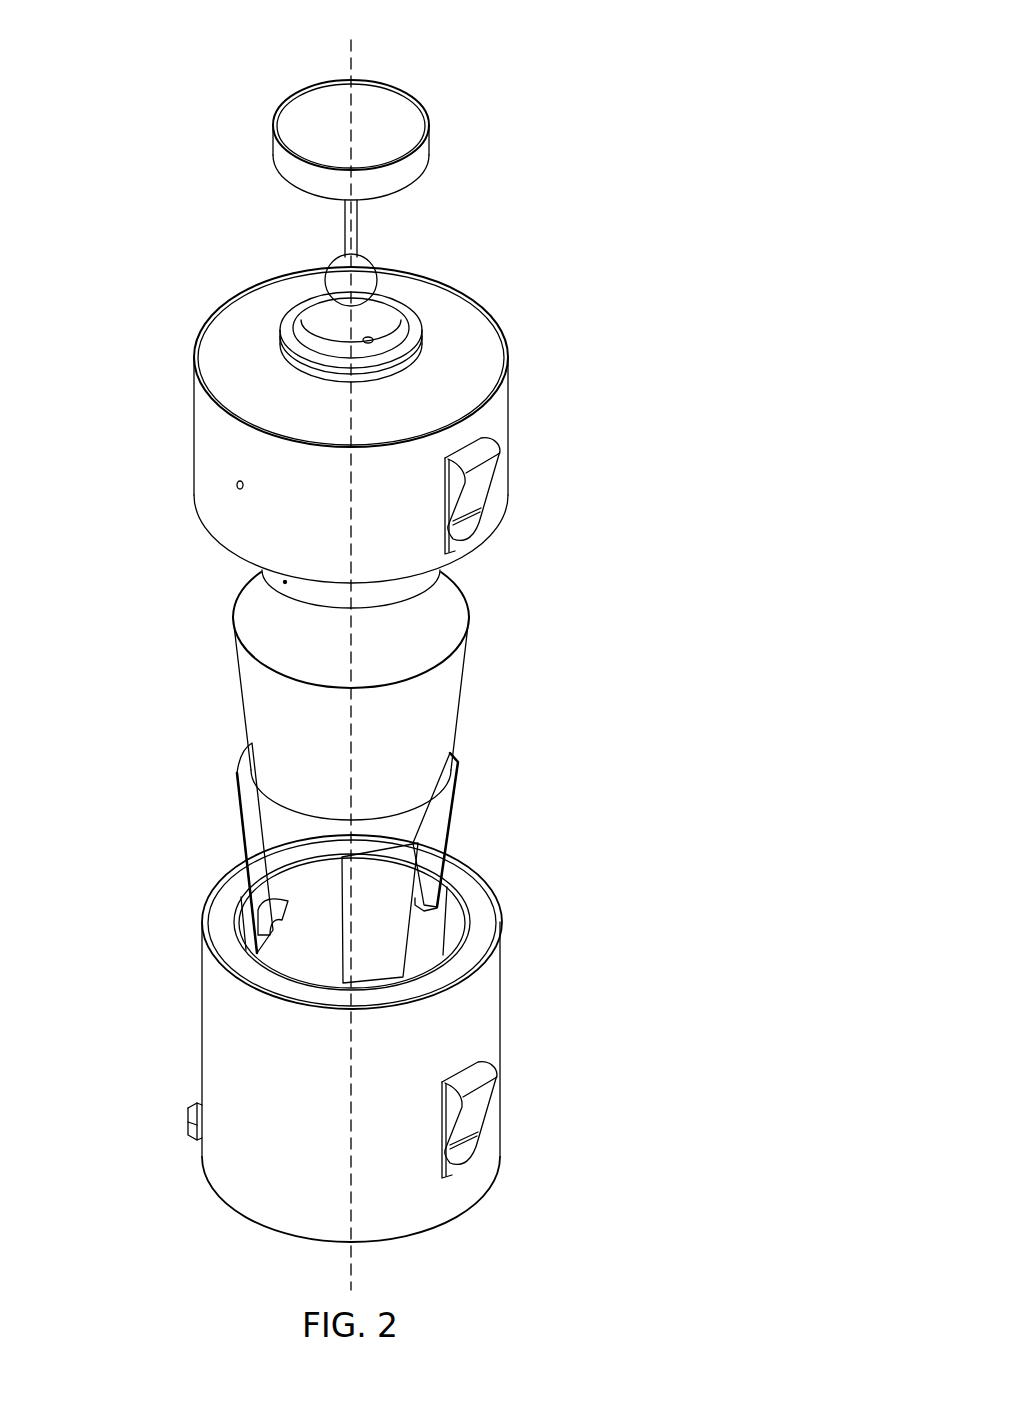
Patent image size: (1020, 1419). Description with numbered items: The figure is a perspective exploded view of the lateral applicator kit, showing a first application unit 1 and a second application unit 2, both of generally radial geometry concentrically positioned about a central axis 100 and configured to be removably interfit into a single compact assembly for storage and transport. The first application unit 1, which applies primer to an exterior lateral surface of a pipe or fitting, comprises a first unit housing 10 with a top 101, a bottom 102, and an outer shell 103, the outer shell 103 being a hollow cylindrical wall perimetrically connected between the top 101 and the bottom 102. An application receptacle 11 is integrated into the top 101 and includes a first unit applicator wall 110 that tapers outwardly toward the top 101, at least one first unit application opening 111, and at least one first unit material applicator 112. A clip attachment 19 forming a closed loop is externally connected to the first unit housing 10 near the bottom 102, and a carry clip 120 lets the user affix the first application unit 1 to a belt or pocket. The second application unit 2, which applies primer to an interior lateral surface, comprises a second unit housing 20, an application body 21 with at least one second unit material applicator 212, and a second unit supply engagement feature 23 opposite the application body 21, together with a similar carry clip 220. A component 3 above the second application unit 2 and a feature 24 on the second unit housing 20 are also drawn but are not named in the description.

The central axis 100 is at (352, 62).
The knob cap 3 is at (514, 107).
The second application unit 2 is at (658, 390).
The top surface of housing 24 is at (230, 307).
The second unit housing 20 is at (212, 413).
The second unit supply engagement feature 23 is at (450, 348).
The carry clip 220 is at (483, 483).
The application body 21 is at (413, 609).
The second unit material applicator 212 is at (450, 677).
The first unit material applicator 112 is at (203, 808).
The first unit applicator wall 110 is at (307, 882).
The top 101 is at (469, 856).
The first unit application opening 111 is at (242, 932).
The first unit housing 10 is at (223, 1006).
The clip attachment 19 is at (188, 1110).
The application receptacle 11 is at (326, 966).
The carry clip 120 is at (482, 1094).
The first application unit 1 is at (660, 1137).
The outer shell 103 is at (255, 1200).
The bottom 102 is at (435, 1249).